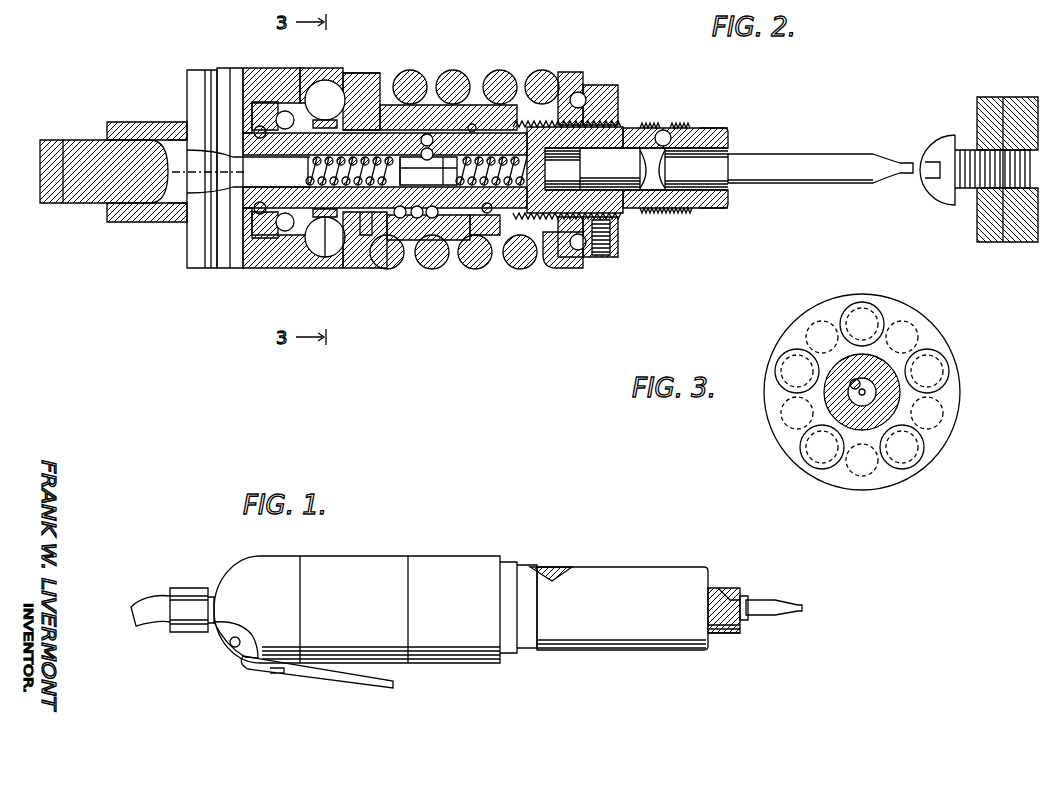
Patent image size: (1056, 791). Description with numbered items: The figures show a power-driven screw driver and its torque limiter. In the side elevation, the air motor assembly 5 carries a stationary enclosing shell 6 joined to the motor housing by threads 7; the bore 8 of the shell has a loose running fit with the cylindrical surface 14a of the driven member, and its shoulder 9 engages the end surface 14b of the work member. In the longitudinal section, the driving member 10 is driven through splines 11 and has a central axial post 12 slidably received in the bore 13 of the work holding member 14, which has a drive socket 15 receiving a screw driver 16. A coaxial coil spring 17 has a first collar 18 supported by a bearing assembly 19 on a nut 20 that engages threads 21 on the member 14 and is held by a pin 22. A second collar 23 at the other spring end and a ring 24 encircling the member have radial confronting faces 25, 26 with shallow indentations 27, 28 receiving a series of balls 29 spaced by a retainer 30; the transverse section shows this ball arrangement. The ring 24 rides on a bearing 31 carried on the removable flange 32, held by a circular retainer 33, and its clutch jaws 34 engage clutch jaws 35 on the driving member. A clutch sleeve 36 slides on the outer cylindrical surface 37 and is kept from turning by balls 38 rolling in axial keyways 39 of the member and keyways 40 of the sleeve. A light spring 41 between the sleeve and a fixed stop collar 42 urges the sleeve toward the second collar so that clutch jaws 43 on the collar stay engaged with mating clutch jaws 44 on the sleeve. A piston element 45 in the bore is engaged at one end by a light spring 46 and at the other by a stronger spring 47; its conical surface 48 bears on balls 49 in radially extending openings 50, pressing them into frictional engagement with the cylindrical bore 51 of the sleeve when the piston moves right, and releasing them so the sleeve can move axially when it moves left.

In FIG. 1, the air motor assembly 5 is at (378, 566).
In FIG. 1, the stationary enclosing shell 6 is at (612, 580).
In FIG. 1, the threads 7 is at (551, 574).
In FIG. 1, the bore 8 is at (729, 592).
In FIG. 1, the shoulder 9 is at (746, 592).
In FIG. 2, the driving member 10 is at (165, 147).
In FIG. 2, the splines 11 is at (52, 138).
In FIG. 2, the central axial post 12 is at (232, 169).
In FIG. 2, the bore 13 is at (358, 262).
In FIG. 3, the bore 13 is at (878, 392).
In FIG. 2, the work holding member 14 is at (300, 200).
In FIG. 3, the work holding member 14 is at (862, 432).
In FIG. 1, the work holding member 14 is at (733, 622).
In FIG. 2, the cylindrical surface 14a is at (706, 128).
In FIG. 2, the end surface 14b is at (730, 136).
In FIG. 2, the drive socket 15 is at (655, 196).
In FIG. 2, the screw driver 16 is at (844, 157).
In FIG. 1, the screw driver 16 is at (783, 600).
In FIG. 2, the coaxial coil spring 17 is at (519, 262).
In FIG. 2, the first collar 18 is at (572, 92).
In FIG. 2, the bearing assembly 19 is at (581, 250).
In FIG. 2, the nut 20 is at (616, 96).
In FIG. 2, the threads 21 is at (612, 123).
In FIG. 2, the pin 22 is at (619, 242).
In FIG. 2, the second collar 23 is at (375, 84).
In FIG. 2, the ring 24 is at (258, 86).
In FIG. 2, the radial confronting face 25 is at (345, 78).
In FIG. 2, the radial confronting face 26 is at (312, 78).
In FIG. 2, the shallow indentations 27 is at (355, 96).
In FIG. 3, the shallow indentations 27 is at (812, 330).
In FIG. 2, the shallow indentations 28 is at (285, 110).
In FIG. 2, the balls 29 is at (326, 258).
In FIG. 3, the balls 29 is at (864, 320).
In FIG. 2, the retainer 30 is at (325, 80).
In FIG. 3, the retainer 30 is at (940, 334).
In FIG. 2, the bearing 31 is at (283, 233).
In FIG. 2, the removable flange 32 is at (262, 240).
In FIG. 2, the circular retainer 33 is at (256, 212).
In FIG. 2, the clutch jaws 34 is at (236, 84).
In FIG. 2, the clutch jaws 35 is at (212, 256).
In FIG. 2, the clutch sleeve 36 is at (432, 270).
In FIG. 2, the outer cylindrical surface 37 is at (364, 245).
In FIG. 2, the balls 38 is at (401, 218).
In FIG. 2, the axial keyways 39 is at (444, 178).
In FIG. 2, the axial keyways 40 is at (386, 262).
In FIG. 2, the light spring 41 is at (506, 85).
In FIG. 2, the stop collar 42 is at (487, 232).
In FIG. 2, the clutch jaws 43 is at (392, 112).
In FIG. 2, the clutch jaws 44 is at (407, 165).
In FIG. 2, the piston element 45 is at (468, 222).
In FIG. 2, the light spring 46 is at (550, 262).
In FIG. 2, the stronger spring 47 is at (318, 171).
In FIG. 3, the stronger spring 47 is at (852, 390).
In FIG. 2, the conical surface 48 is at (428, 134).
In FIG. 2, the balls 49 is at (453, 70).
In FIG. 2, the radially extending openings 50 is at (433, 150).
In FIG. 2, the cylindrical bore 51 is at (474, 125).